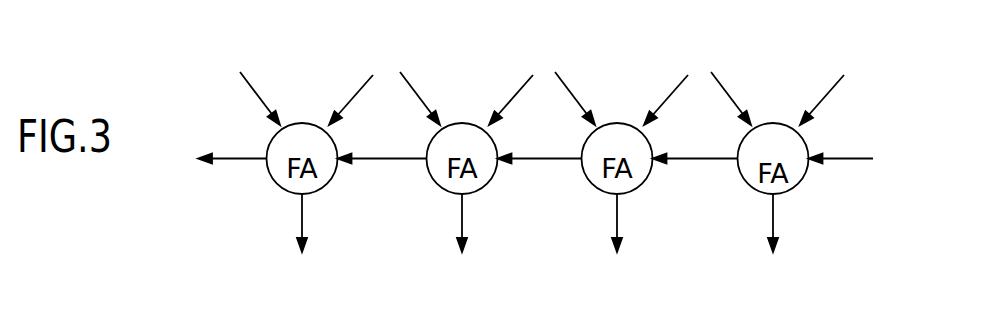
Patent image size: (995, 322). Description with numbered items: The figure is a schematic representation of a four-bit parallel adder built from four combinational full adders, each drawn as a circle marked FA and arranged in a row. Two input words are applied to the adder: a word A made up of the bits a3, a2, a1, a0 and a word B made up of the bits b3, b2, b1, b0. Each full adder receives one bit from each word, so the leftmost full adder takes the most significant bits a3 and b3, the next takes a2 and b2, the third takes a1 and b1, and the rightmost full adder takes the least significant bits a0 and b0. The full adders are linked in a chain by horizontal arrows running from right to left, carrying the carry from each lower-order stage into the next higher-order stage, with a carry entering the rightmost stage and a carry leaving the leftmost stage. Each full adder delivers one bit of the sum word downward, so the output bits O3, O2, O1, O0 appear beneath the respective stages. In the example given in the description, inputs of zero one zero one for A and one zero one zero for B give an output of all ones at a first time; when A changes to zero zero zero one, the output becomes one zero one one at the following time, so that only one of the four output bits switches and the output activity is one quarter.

The most significant bit of input A a3 is at (254, 83).
The most significant bit of input B b3 is at (353, 83).
The most significant output bit O3 is at (308, 242).
The third bit of input A a2 is at (414, 83).
The third bit of input B b2 is at (513, 83).
The third output bit O2 is at (468, 242).
The second bit of input A a1 is at (569, 83).
The second bit of input B b1 is at (668, 83).
The second output bit O1 is at (623, 242).
The least significant bit of input A a0 is at (725, 83).
The least significant bit of input B b0 is at (824, 83).
The least significant output bit O0 is at (779, 242).